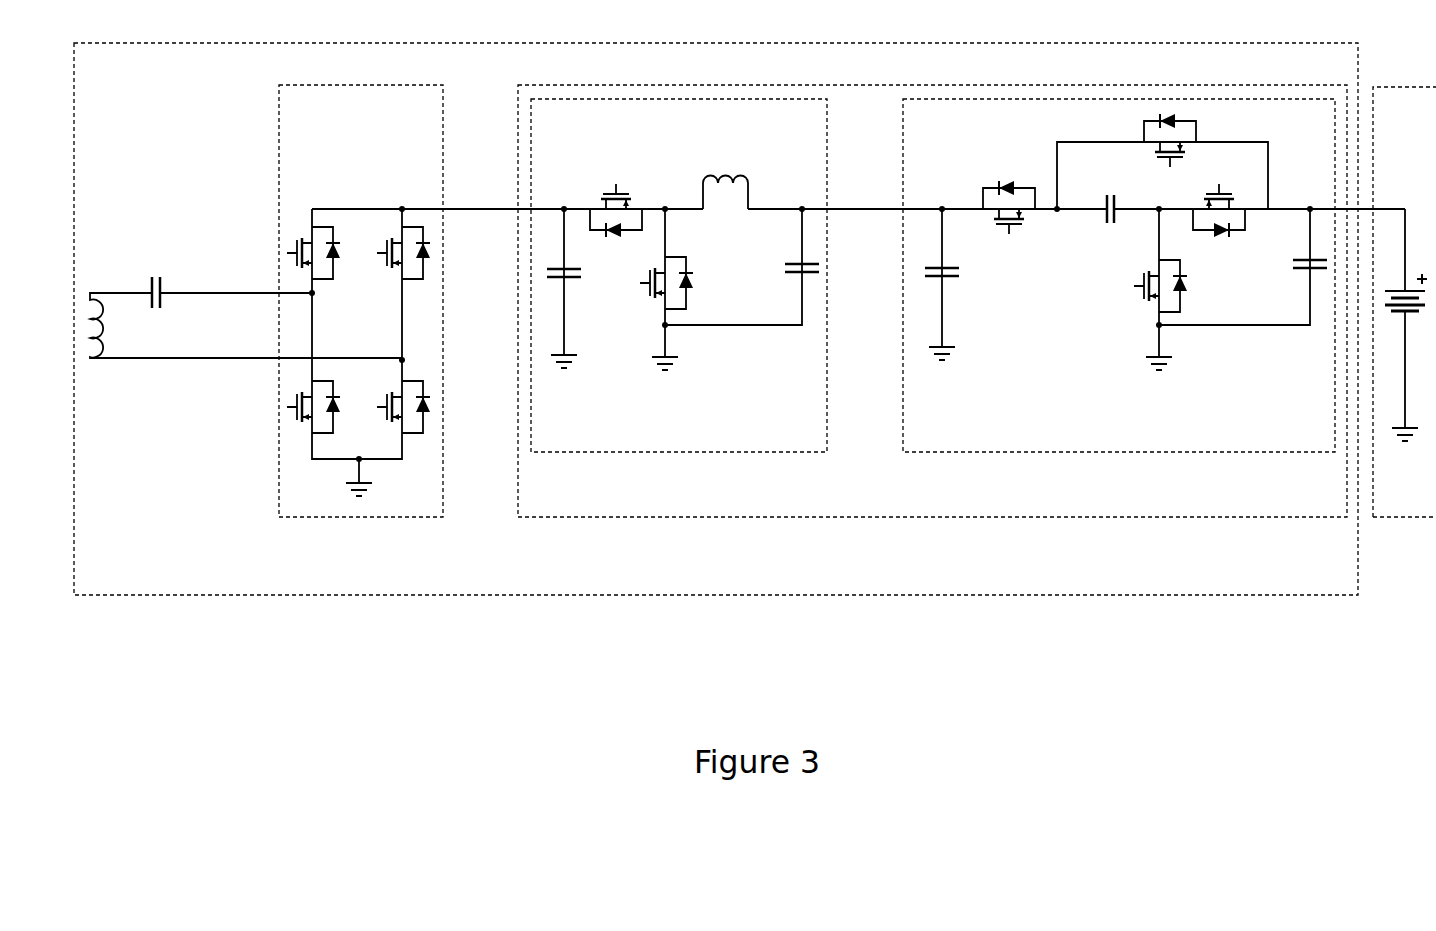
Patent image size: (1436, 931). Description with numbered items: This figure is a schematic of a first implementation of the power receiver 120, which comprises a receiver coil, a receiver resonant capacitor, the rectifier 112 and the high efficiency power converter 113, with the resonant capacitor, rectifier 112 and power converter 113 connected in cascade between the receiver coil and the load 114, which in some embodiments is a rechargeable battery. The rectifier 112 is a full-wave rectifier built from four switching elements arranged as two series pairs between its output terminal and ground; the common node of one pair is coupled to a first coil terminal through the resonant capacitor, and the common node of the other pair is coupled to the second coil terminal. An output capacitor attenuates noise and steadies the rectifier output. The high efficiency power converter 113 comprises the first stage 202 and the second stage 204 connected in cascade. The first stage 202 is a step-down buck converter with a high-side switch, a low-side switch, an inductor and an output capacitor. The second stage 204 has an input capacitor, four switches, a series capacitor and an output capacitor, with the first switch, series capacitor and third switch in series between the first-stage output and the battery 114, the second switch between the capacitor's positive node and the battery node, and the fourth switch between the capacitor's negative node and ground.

The rectifier 112 is at (437, 511).
The high efficiency power converter 113 is at (1325, 503).
The load 114 is at (1435, 503).
The power receiver 120 is at (1343, 583).
The first stage 202 is at (808, 441).
The second stage 204 is at (1320, 441).